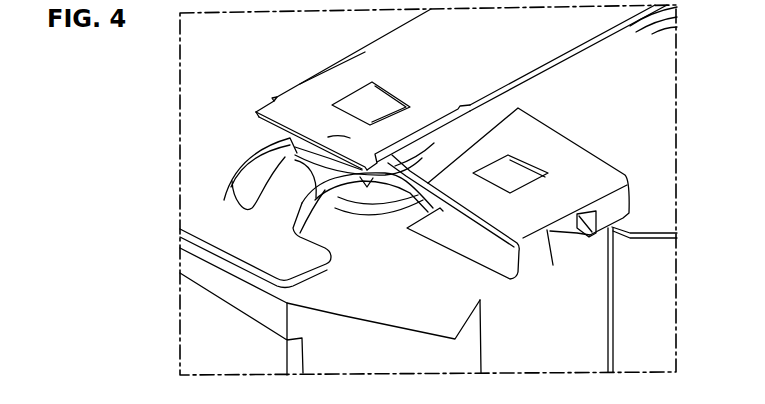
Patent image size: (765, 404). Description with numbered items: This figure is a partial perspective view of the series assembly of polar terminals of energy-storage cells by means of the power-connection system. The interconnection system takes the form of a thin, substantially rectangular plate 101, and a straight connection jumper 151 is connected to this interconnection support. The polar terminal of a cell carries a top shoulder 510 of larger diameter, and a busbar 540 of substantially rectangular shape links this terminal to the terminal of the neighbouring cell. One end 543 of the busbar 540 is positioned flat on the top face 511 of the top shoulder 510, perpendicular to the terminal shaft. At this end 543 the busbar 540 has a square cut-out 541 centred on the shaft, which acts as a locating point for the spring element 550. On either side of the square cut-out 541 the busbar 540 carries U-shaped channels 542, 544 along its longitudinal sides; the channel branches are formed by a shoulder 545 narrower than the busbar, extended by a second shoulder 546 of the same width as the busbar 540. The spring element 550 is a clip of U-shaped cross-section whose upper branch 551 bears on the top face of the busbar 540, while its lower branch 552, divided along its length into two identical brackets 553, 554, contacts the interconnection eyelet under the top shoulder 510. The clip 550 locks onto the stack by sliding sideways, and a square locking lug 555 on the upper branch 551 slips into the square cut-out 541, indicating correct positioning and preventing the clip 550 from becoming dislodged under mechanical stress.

The plate 101 is at (197, 163).
The connection jumper 151 is at (280, 188).
The top face of the top shoulder 511 is at (305, 150).
The end of the busbar 543 is at (298, 183).
The top shoulder 510 is at (338, 203).
The U-shaped channel 544 is at (437, 87).
The shoulder 545 is at (365, 52).
The second shoulder 546 is at (275, 94).
The square cut-out 541 is at (388, 90).
The U-shaped channel 542 is at (449, 114).
The busbar 540 is at (600, 22).
The spring element 550 is at (523, 210).
The upper branch 551 is at (567, 163).
The square locking lug 555 is at (510, 173).
The lower branch 552 is at (492, 252).
The bracket 553 is at (470, 240).
The bracket 554 is at (588, 238).